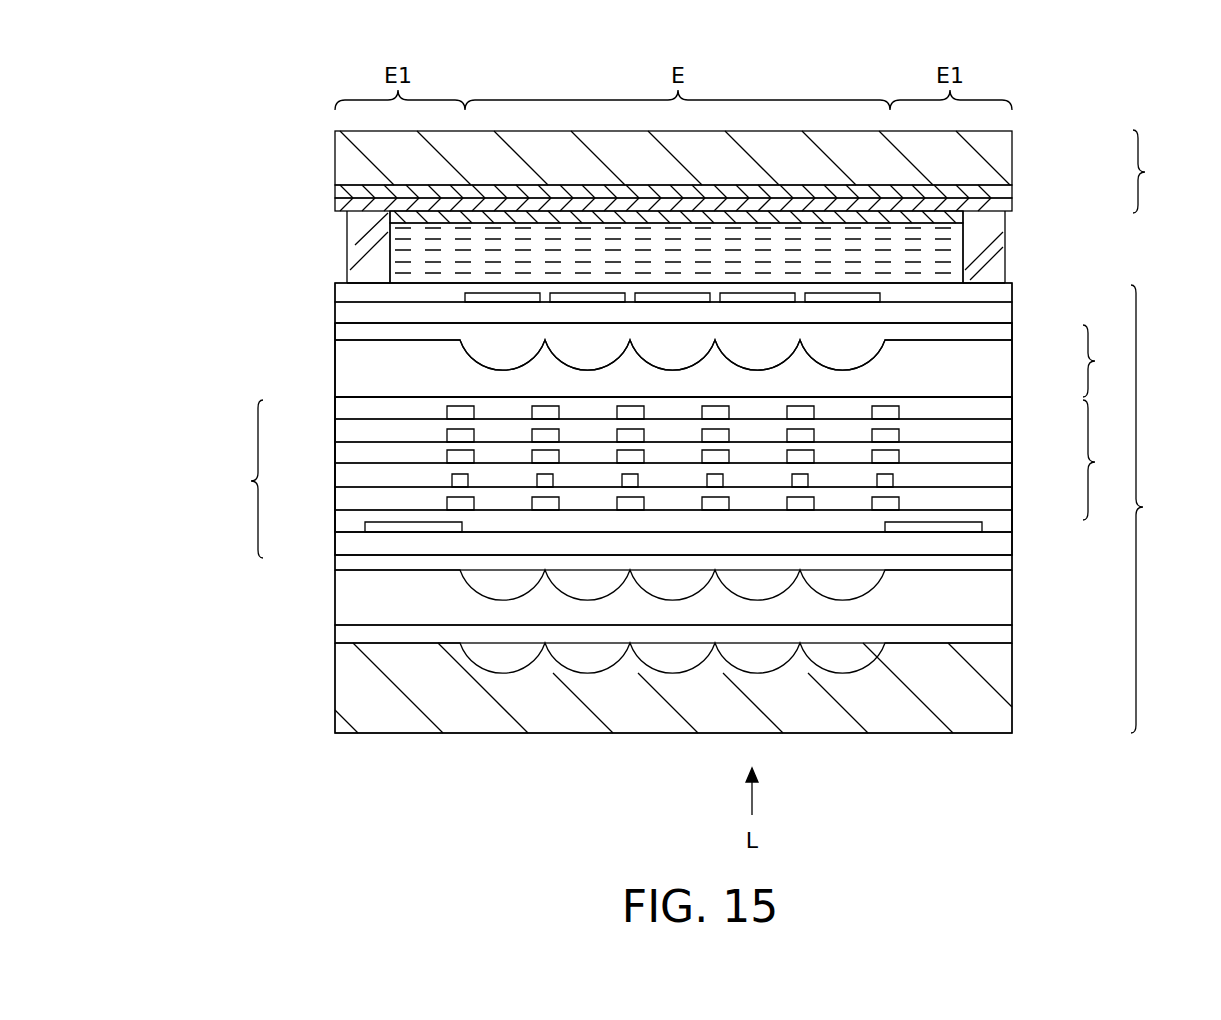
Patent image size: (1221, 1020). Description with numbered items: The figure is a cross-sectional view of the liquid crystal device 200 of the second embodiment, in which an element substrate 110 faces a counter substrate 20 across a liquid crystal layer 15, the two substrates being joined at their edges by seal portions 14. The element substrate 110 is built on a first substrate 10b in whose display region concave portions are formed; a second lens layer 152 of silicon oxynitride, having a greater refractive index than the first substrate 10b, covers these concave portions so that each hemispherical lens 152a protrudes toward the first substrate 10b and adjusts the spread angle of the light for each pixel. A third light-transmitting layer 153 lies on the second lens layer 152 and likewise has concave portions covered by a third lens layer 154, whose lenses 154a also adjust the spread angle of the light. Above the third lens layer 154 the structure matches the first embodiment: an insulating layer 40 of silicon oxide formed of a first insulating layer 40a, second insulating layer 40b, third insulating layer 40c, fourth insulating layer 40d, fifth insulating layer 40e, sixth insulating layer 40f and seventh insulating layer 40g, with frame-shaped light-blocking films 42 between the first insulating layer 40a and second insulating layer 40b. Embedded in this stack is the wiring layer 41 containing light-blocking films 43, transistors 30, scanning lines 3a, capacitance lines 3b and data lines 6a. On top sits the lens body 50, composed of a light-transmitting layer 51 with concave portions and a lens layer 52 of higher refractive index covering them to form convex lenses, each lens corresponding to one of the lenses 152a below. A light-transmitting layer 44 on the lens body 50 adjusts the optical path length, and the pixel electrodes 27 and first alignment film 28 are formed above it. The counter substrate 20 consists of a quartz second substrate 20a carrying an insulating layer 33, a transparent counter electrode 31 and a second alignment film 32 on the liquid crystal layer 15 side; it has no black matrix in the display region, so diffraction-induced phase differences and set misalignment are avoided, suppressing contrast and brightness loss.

The liquid crystal device 200 is at (1113, 61).
The counter substrate 20 is at (1156, 171).
The second substrate 20a is at (1012, 146).
The insulating layer 33 is at (1012, 192).
The counter electrode 31 is at (1008, 208).
The second alignment film 32 is at (965, 224).
The seal material 14 is at (1000, 262).
The liquid crystal layer 15 is at (410, 238).
The pixel electrodes 27 is at (668, 292).
The first alignment film 28 is at (1012, 290).
The light-transmitting layer 44 is at (345, 312).
The lens body 50 is at (731, 360).
The lens layer 52 is at (1012, 330).
The light-transmitting layer 51 is at (1012, 362).
The insulating layer 40 is at (612, 477).
The wiring layer 41 is at (731, 464).
The seventh insulating layer 40g is at (345, 410).
The sixth insulating layer 40f is at (345, 433).
The fifth insulating layer 40e is at (345, 456).
The fourth insulating layer 40d is at (345, 479).
The third insulating layer 40c is at (345, 502).
The second insulating layer 40b is at (345, 526).
The first insulating layer 40a is at (345, 549).
The data lines 6a is at (900, 410).
The capacitance lines 3b is at (903, 432).
The scanning lines 3a is at (903, 454).
The transistors 30 is at (900, 477).
The light-blocking films 43 is at (900, 500).
The light-blocking films 42 is at (985, 525).
The element substrate 110 is at (763, 508).
The third lens layer 154 is at (1012, 562).
The third light-transmitting layer 153 is at (1012, 595).
The lens 154a is at (752, 578).
The second lens layer 152 is at (1012, 635).
The first substrate 10b is at (1012, 697).
The lens 152a is at (848, 662).